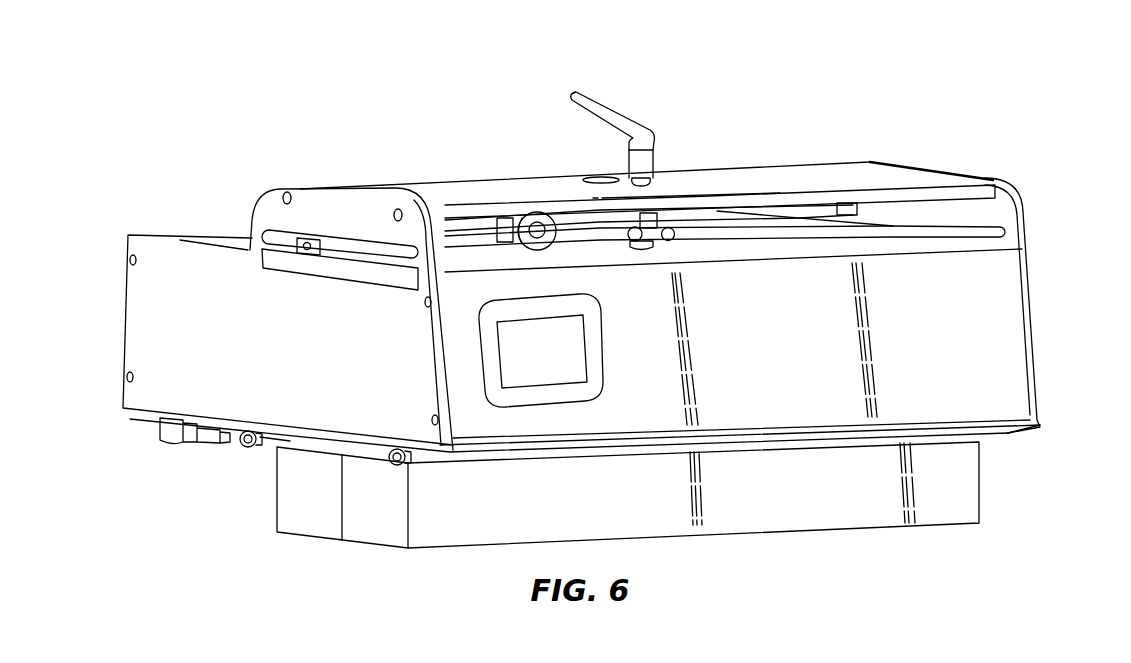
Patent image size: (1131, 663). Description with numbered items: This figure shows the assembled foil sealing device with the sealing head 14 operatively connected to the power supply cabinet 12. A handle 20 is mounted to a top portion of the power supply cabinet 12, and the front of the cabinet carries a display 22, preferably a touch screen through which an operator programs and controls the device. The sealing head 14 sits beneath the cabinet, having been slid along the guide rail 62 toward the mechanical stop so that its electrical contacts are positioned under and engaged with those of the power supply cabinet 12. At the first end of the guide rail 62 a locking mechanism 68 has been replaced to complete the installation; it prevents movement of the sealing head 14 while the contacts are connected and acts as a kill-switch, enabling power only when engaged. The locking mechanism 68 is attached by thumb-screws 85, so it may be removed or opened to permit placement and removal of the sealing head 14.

The power supply cabinet 12 is at (1055, 267).
The sealing head 14 is at (1005, 498).
The handle 20 is at (613, 112).
The display 22 is at (541, 350).
The guide rail 62 is at (1010, 432).
The locking mechanism 68 is at (278, 440).
The thumb-screws 85 is at (240, 444).